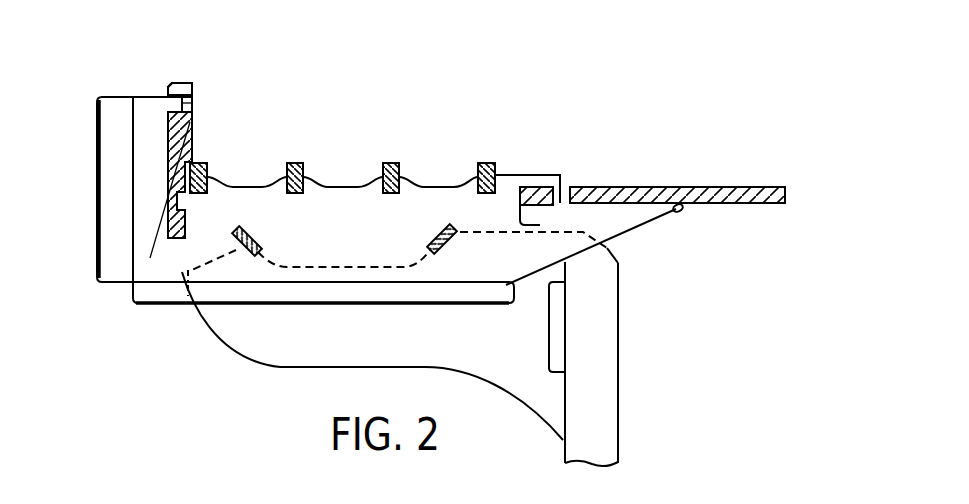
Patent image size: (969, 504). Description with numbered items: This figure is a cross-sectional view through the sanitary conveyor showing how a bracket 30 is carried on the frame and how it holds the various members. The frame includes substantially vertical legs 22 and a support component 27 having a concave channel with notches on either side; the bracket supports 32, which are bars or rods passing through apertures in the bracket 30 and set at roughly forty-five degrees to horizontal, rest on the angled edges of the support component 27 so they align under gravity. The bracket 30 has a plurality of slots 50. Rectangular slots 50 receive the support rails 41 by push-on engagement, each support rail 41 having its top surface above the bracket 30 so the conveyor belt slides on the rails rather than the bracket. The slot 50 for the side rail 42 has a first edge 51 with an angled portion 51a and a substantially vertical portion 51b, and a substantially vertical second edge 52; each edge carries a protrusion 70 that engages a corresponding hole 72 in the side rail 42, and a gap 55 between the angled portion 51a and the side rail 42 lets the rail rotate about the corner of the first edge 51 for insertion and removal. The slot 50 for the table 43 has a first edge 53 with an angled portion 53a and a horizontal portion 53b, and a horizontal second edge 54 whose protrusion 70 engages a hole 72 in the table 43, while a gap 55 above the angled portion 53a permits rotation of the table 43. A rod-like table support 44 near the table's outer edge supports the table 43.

The leg 22 is at (620, 388).
The support component 27 is at (500, 383).
The bracket 30 is at (348, 200).
The bracket support 32 is at (440, 228).
The support rail 41 is at (292, 162).
The side rail 42 is at (181, 82).
The table 43 is at (762, 187).
The table support 44 is at (682, 212).
The slot 50 is at (386, 163).
The first edge 51 is at (168, 122).
The angled portion 51a is at (157, 206).
The vertical portion 51b is at (190, 121).
The second edge 52 is at (172, 238).
The first edge 53 is at (630, 205).
The angled portion 53a is at (598, 187).
The horizontal portion 53b is at (657, 187).
The second edge 54 is at (528, 187).
The gap 55 is at (150, 258).
The protrusion 70 is at (193, 100).
The hole 72 is at (194, 104).